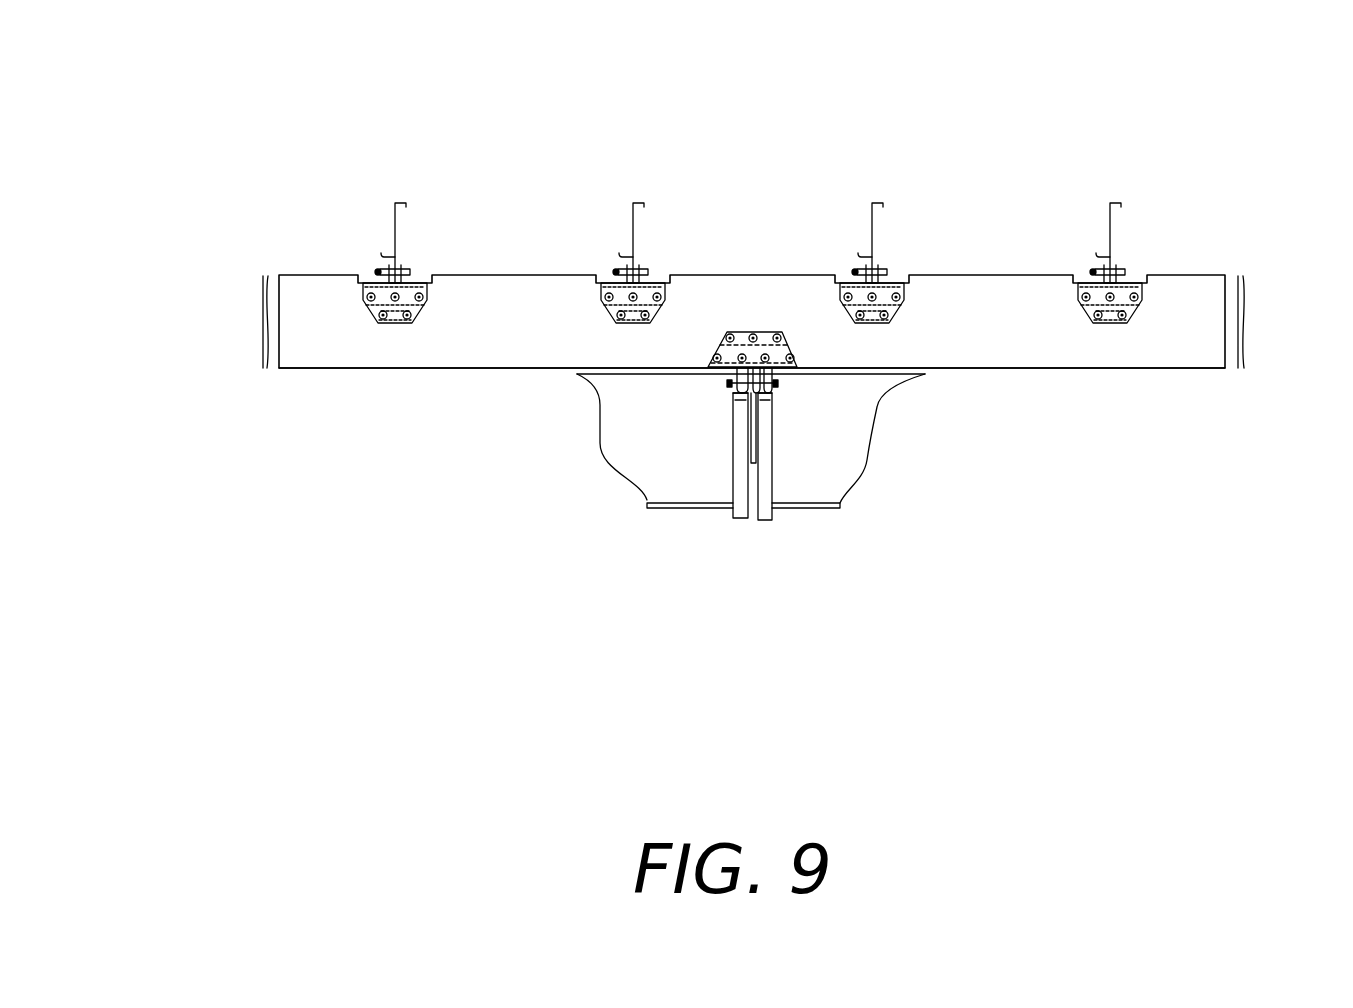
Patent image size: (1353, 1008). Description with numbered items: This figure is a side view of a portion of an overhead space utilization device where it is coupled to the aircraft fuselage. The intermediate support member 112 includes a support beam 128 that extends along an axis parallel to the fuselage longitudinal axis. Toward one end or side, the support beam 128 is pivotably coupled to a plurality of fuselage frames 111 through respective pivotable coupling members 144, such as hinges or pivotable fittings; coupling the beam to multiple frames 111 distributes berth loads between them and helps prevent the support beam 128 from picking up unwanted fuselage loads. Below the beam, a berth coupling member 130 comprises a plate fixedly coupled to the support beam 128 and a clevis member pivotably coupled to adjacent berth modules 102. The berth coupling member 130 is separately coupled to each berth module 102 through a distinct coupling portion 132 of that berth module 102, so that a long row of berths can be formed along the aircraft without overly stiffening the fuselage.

The berth module 102 is at (664, 470).
The fuselage frame 111 is at (395, 193).
The intermediate support member 112 is at (310, 275).
The support beam 128 is at (1158, 362).
The berth coupling member 130 is at (758, 332).
The coupling portion 132 is at (737, 390).
The pivotable coupling member 144 is at (623, 318).